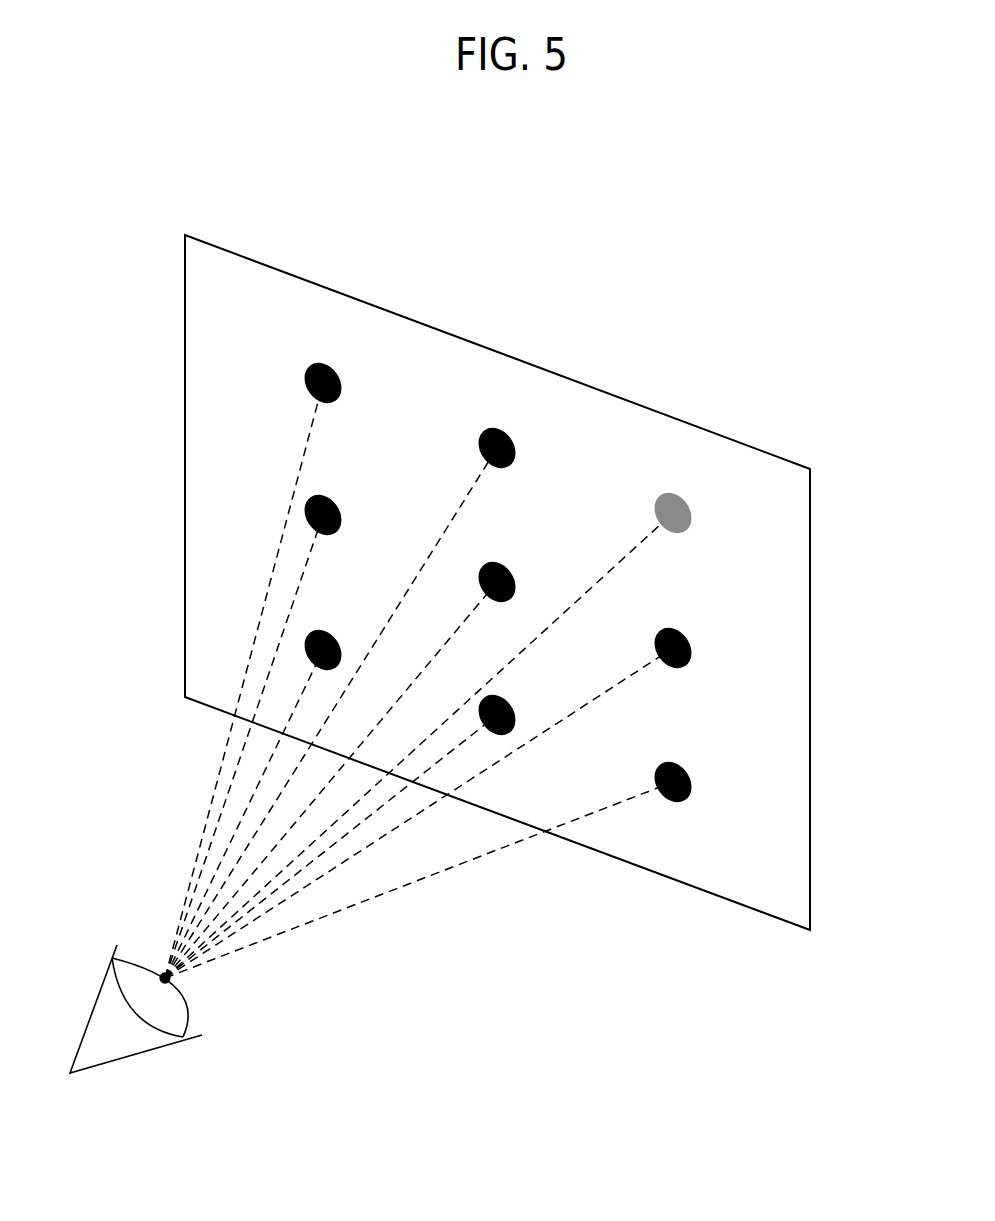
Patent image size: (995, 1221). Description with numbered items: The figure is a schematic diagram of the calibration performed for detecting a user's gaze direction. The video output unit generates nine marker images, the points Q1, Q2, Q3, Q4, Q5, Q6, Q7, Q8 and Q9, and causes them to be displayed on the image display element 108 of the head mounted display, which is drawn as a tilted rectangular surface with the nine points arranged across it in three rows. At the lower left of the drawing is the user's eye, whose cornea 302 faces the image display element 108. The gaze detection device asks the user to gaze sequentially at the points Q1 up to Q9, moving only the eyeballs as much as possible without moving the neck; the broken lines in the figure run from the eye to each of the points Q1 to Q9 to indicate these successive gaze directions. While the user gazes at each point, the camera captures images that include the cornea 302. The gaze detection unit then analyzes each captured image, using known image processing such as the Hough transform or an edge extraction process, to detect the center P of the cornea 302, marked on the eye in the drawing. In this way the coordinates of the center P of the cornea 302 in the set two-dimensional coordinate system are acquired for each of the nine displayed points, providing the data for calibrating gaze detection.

The image display element 108 is at (750, 448).
The cornea 302 is at (132, 970).
The center of the cornea P is at (179, 988).
The point Q1 is at (338, 371).
The point Q2 is at (512, 436).
The point Q3 is at (688, 501).
The point Q4 is at (338, 503).
The point Q5 is at (512, 570).
The point Q6 is at (688, 636).
The point Q7 is at (338, 638).
The point Q8 is at (512, 703).
The point Q9 is at (688, 770).